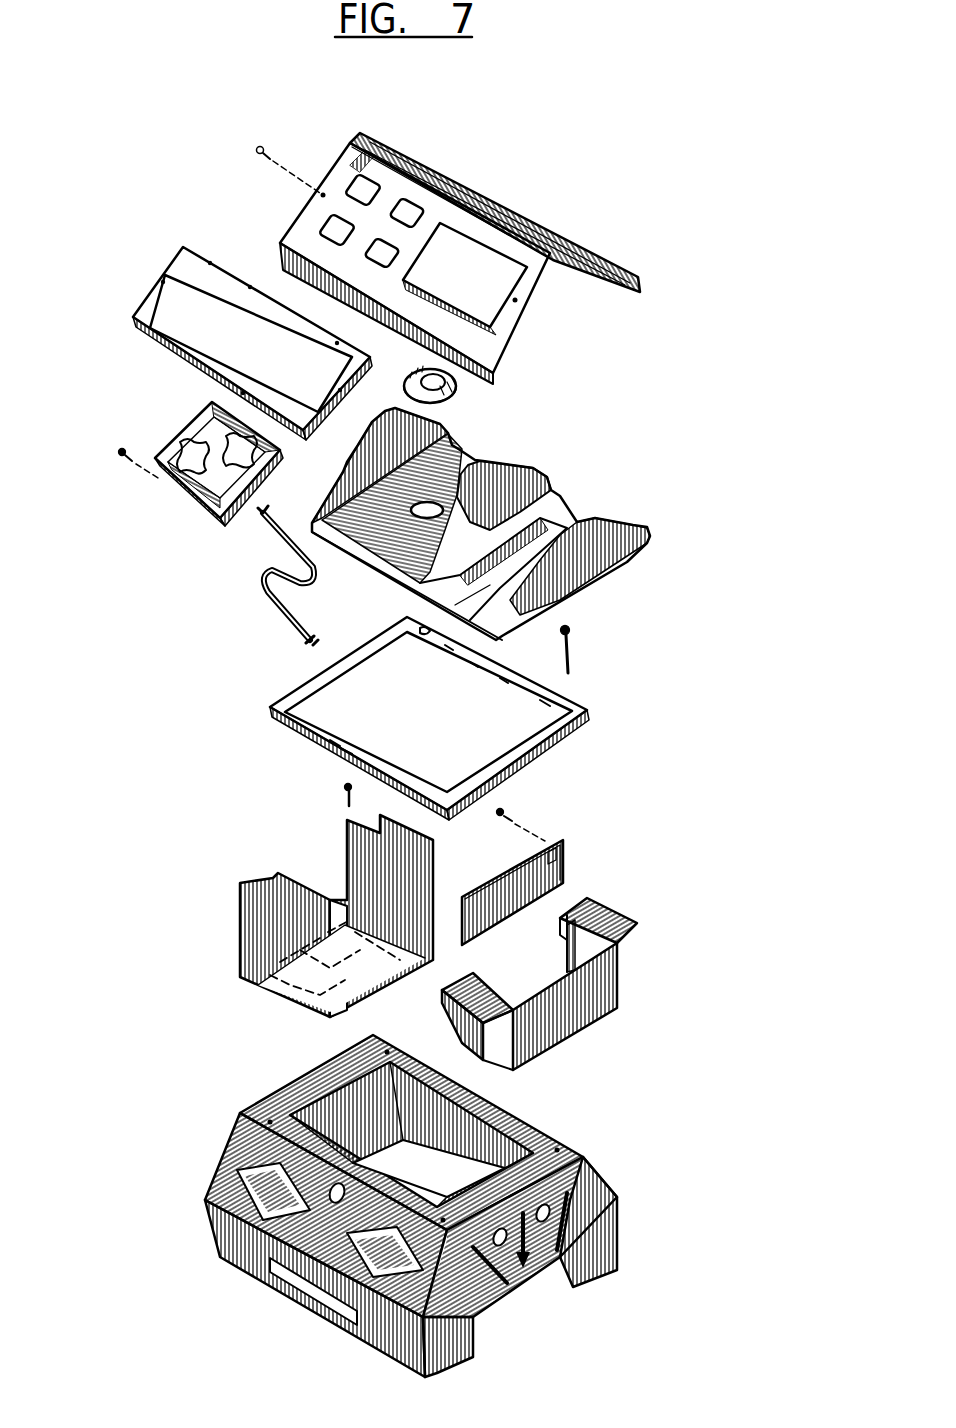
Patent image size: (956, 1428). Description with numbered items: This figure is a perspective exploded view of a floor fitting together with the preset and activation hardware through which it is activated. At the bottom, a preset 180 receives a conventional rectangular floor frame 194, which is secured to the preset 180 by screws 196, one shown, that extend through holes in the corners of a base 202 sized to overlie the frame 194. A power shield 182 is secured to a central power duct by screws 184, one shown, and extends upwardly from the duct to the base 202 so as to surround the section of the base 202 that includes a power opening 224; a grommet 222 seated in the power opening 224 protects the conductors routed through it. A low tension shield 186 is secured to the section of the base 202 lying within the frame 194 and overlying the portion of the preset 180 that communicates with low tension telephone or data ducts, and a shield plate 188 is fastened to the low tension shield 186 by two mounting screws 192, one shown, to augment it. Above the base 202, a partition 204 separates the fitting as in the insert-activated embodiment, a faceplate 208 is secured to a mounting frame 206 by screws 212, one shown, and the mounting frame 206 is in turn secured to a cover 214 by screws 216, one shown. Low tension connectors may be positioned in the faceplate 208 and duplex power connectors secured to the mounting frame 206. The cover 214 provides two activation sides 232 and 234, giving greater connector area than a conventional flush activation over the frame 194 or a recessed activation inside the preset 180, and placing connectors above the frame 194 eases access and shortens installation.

The preset 180 is at (585, 1163).
The power shield 182 is at (233, 946).
The screws 184 is at (343, 795).
The low tension shield 186 is at (620, 978).
The shield plate 188 is at (550, 866).
The mounting screws 192 is at (503, 812).
The floor frame 194 is at (582, 706).
The screws 196 is at (572, 641).
The base 202 is at (652, 532).
The partition 204 is at (520, 470).
The mounting frame 206 is at (133, 325).
The faceplate 208 is at (185, 418).
The screws 212 is at (118, 456).
The cover 214 is at (610, 262).
The screws 216 is at (275, 152).
The grommet 222 is at (457, 386).
The power opening 224 is at (437, 500).
The activation side 232 is at (497, 203).
The activation side 234 is at (372, 142).